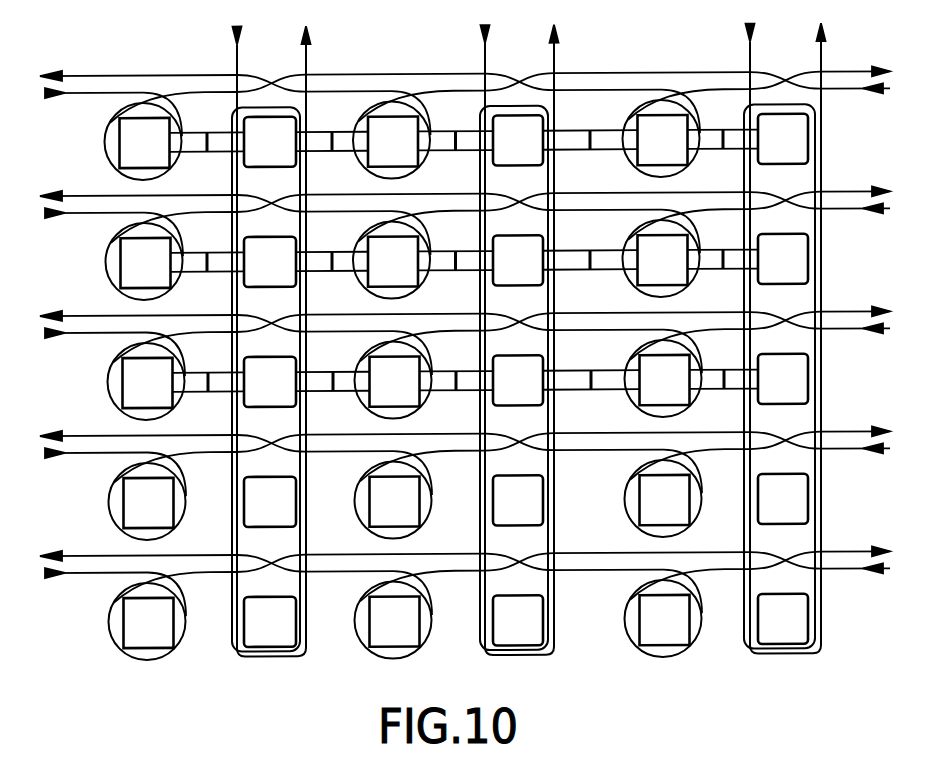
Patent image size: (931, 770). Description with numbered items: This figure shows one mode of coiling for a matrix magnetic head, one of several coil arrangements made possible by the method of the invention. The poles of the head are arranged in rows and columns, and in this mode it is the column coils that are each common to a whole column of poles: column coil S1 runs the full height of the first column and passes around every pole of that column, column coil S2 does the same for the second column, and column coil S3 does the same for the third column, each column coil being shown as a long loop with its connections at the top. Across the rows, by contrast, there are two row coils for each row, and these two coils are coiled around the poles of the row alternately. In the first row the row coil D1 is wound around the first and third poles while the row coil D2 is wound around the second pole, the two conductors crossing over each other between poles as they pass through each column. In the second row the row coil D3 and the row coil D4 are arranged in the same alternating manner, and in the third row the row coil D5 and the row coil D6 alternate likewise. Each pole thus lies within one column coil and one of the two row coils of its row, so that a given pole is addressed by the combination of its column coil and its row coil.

The row coil D1 is at (451, 126).
The row coil D2 is at (451, 118).
The row coil D3 is at (451, 246).
The row coil D4 is at (451, 238).
The row coil D5 is at (451, 366).
The row coil D6 is at (451, 358).
The column coil S1 is at (271, 337).
The column coil S2 is at (519, 335).
The column coil S3 is at (785, 334).